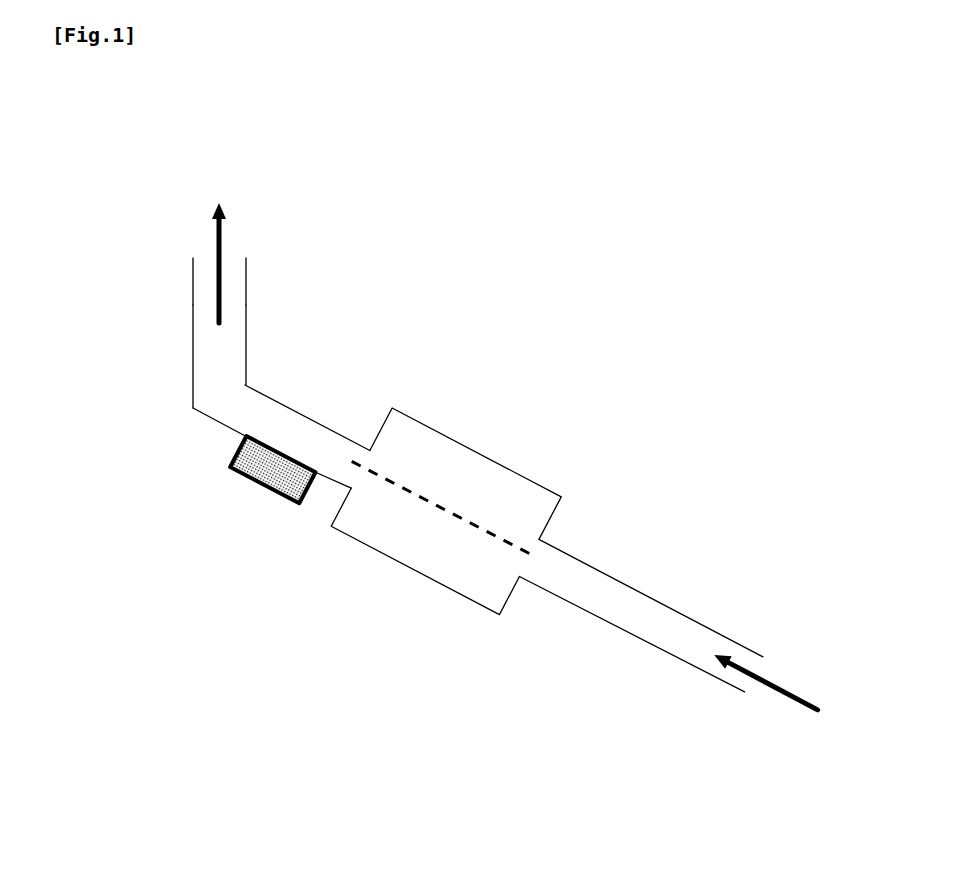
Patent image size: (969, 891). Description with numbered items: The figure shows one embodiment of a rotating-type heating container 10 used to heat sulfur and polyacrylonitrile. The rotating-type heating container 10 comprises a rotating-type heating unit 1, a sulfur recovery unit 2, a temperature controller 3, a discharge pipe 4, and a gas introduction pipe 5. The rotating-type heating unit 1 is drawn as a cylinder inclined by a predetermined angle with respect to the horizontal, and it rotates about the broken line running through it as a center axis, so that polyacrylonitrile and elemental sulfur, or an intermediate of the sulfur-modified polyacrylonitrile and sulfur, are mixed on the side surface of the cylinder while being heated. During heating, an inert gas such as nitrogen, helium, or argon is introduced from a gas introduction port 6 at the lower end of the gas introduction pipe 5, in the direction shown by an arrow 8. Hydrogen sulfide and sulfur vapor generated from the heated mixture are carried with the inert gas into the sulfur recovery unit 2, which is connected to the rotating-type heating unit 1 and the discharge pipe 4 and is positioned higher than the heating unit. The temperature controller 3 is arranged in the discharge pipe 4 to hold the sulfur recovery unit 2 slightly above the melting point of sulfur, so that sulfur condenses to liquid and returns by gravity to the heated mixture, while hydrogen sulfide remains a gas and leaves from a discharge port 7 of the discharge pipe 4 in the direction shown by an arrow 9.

The rotating-type heating unit 1 is at (543, 449).
The sulfur recovery unit 2 is at (287, 419).
The temperature controller 3 is at (248, 497).
The discharge pipe 4 is at (174, 338).
The gas introduction pipe 5 is at (638, 662).
The gas introduction port 6 is at (773, 644).
The discharge port 7 is at (174, 269).
The arrow 8 is at (779, 690).
The arrow 9 is at (217, 237).
The rotating-type heating container 10 is at (420, 478).